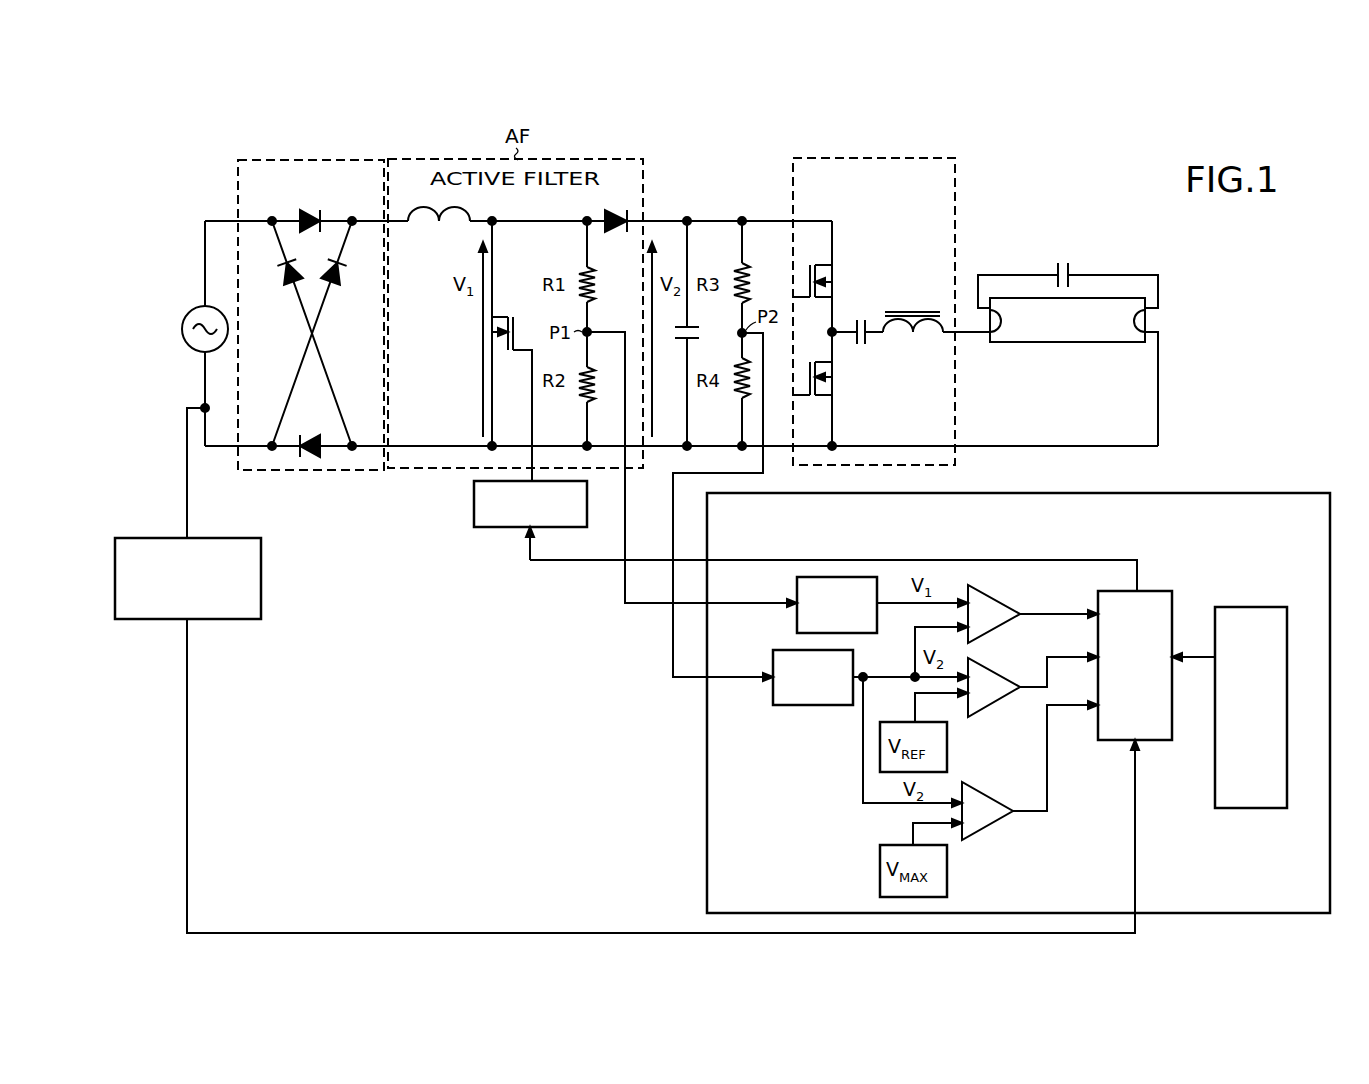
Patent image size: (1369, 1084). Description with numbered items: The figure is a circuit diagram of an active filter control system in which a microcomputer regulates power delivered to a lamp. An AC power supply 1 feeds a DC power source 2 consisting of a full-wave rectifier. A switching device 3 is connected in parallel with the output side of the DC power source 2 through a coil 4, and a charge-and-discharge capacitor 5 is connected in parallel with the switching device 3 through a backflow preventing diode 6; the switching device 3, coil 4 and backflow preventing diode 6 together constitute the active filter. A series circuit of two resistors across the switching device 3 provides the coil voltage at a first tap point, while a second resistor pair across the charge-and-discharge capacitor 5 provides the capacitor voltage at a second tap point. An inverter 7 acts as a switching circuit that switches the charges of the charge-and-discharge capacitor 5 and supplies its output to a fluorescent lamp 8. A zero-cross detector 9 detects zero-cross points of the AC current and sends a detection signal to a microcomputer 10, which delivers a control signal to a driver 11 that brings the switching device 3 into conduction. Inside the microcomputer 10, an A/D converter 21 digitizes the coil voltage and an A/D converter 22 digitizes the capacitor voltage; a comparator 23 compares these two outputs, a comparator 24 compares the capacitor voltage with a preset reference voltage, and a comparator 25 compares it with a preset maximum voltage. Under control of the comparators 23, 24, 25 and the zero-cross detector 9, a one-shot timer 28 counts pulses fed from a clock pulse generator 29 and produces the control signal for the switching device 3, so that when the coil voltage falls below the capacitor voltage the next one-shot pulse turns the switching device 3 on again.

The AC power supply 1 is at (194, 306).
The DC power source 2 is at (236, 186).
The switching device 3 is at (517, 317).
The coil 4 is at (438, 234).
The charge-and-discharge capacitor 5 is at (702, 333).
The backflow preventing diode 6 is at (617, 236).
The inverter 7 is at (956, 182).
The fluorescent lamp 8 is at (1068, 344).
The zero-cross detector 9 is at (262, 580).
The microcomputer 10 is at (1260, 493).
The driver 11 is at (489, 528).
The A/D converter 21 is at (796, 630).
The A/D converter 22 is at (813, 706).
The comparator 23 is at (1019, 601).
The comparator 24 is at (1003, 674).
The comparator 25 is at (997, 797).
The one-shot timer 28 is at (1161, 591).
The clock pulse generator 29 is at (1255, 608).